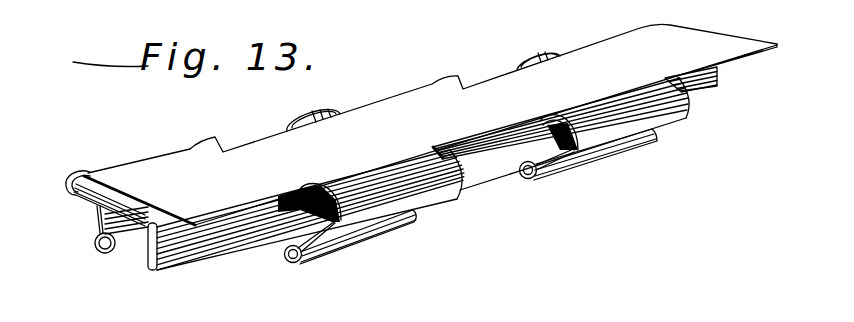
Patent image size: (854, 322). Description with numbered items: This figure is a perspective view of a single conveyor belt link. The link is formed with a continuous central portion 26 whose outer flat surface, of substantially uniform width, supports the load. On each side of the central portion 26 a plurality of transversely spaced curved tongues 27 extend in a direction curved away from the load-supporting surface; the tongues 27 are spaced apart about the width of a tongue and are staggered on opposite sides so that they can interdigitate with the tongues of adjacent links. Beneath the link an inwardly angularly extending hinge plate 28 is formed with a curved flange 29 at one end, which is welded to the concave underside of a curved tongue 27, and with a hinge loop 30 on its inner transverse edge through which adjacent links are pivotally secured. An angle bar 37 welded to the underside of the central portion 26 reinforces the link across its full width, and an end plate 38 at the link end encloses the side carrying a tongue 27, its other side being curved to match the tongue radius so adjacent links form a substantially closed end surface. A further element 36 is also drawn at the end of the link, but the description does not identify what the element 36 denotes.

The central portion 26 is at (483, 90).
The curved tongue 27 is at (290, 122).
The hinge plate 28 is at (521, 158).
The curved flange 29 is at (370, 228).
The hinge loop 30 is at (287, 259).
The end clip 36 is at (97, 224).
The angle bar 37 is at (147, 265).
The end plate 38 is at (78, 196).